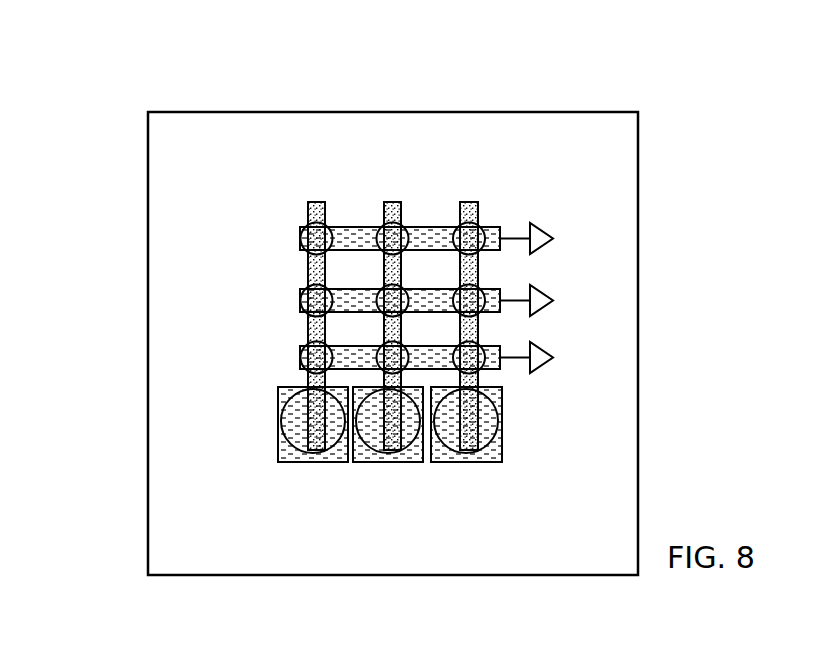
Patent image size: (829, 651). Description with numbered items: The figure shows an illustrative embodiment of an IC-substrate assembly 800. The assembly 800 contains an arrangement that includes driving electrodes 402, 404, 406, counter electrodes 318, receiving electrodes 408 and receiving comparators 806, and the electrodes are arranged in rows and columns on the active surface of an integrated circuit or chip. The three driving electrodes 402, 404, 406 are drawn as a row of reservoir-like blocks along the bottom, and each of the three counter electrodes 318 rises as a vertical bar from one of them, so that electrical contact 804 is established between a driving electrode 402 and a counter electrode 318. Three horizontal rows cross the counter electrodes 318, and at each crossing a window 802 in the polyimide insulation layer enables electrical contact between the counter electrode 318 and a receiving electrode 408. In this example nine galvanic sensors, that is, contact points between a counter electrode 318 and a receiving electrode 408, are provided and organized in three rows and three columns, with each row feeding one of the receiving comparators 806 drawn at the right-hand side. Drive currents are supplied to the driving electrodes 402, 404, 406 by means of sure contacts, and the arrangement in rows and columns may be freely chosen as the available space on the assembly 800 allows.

The IC-substrate assembly 800 is at (255, 147).
The counter electrode 318 is at (460, 212).
The window 802 is at (299, 302).
The driving electrode 402 is at (298, 406).
The driving electrode 404 is at (375, 420).
The driving electrode 406 is at (453, 425).
The receiving electrode 408 is at (347, 240).
The receiving comparator 806 is at (540, 350).
The electrical contact 804 is at (277, 424).